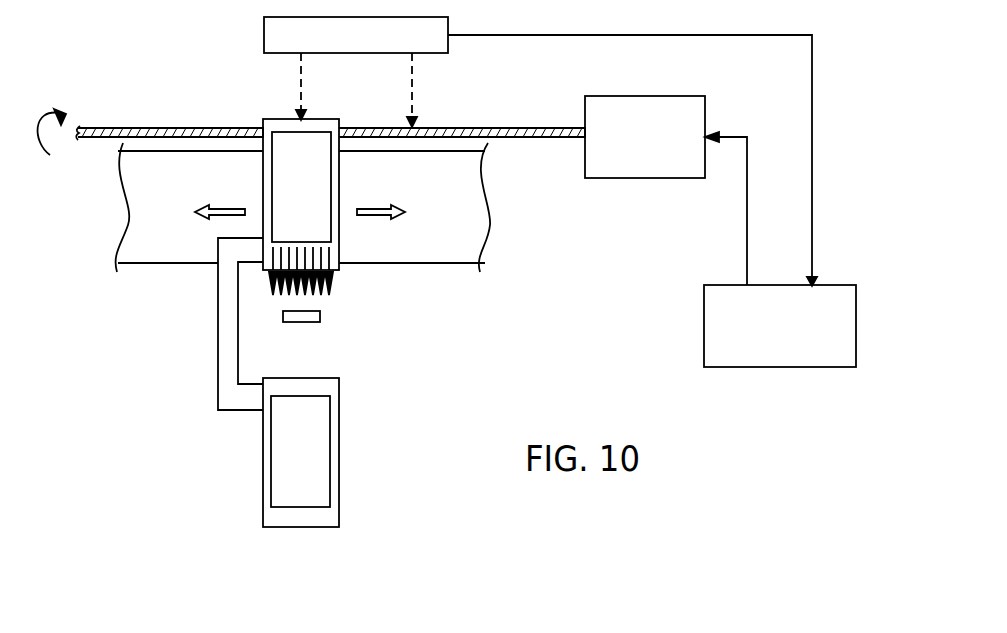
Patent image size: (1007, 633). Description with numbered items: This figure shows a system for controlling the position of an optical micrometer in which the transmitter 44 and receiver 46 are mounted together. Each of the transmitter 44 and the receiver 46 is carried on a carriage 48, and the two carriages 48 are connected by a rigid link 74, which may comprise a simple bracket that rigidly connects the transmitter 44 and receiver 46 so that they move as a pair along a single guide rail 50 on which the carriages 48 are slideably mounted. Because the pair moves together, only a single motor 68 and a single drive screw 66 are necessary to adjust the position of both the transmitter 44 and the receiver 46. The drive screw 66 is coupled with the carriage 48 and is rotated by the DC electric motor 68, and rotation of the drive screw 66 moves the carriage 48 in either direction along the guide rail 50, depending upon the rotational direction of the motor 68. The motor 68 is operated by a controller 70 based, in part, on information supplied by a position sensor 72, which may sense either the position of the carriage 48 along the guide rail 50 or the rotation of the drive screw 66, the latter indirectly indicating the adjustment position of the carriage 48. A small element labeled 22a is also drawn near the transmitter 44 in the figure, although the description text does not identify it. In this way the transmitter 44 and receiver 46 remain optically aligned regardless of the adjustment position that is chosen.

The position sensor 72 is at (264, 30).
The drive screw 66 is at (158, 128).
The guide rail 50 is at (148, 232).
The rigid link 74 is at (218, 322).
The carriage 48 is at (339, 219).
The transmitter 44 is at (318, 232).
The sensor 22a is at (320, 317).
The receiver 46 is at (292, 457).
The DC electric motor 68 is at (640, 178).
The controller 70 is at (704, 322).